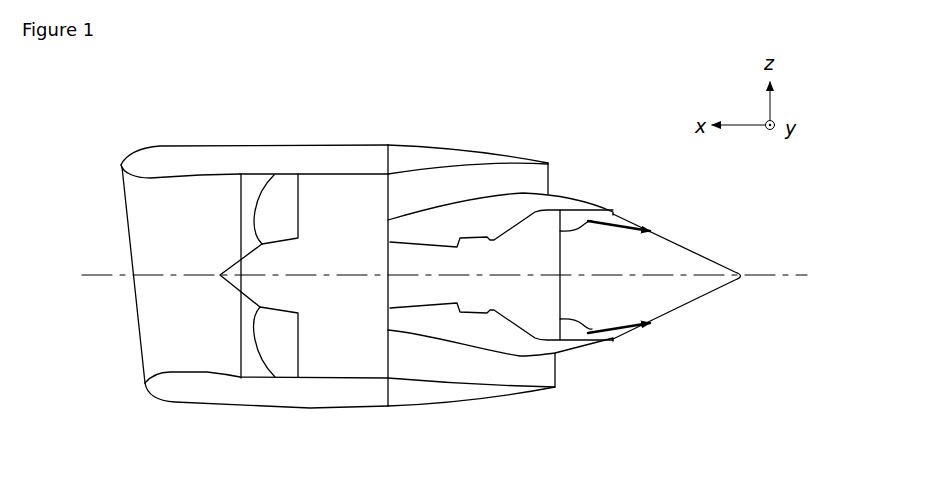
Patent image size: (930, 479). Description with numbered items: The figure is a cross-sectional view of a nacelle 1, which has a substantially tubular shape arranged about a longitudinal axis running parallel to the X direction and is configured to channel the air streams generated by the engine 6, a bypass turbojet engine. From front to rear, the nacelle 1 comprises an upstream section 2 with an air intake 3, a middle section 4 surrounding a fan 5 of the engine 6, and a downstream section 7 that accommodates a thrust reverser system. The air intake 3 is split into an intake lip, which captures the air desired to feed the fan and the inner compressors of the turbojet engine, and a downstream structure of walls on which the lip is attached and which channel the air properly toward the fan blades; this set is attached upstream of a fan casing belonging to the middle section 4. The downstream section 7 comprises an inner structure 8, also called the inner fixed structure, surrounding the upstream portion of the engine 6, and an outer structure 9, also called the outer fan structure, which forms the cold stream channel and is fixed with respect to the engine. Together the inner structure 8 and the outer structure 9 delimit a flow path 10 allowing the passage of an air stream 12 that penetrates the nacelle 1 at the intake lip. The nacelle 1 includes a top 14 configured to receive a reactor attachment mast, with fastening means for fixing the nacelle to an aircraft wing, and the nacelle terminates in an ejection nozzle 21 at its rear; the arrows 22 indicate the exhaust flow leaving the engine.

The nacelle 1 is at (561, 139).
The upstream section 2 is at (173, 167).
The air intake 3 is at (119, 167).
The middle section 4 is at (357, 159).
The fan 5 is at (341, 360).
The engine 6 is at (543, 235).
The downstream section 7 is at (473, 149).
The inner structure 8 is at (532, 191).
The outer structure 9 is at (490, 163).
The flow path 10 is at (400, 193).
The air stream 12 is at (172, 233).
The top 14 is at (366, 144).
The ejection nozzle 21 is at (683, 234).
The primary flow exhaust 22 is at (612, 211).